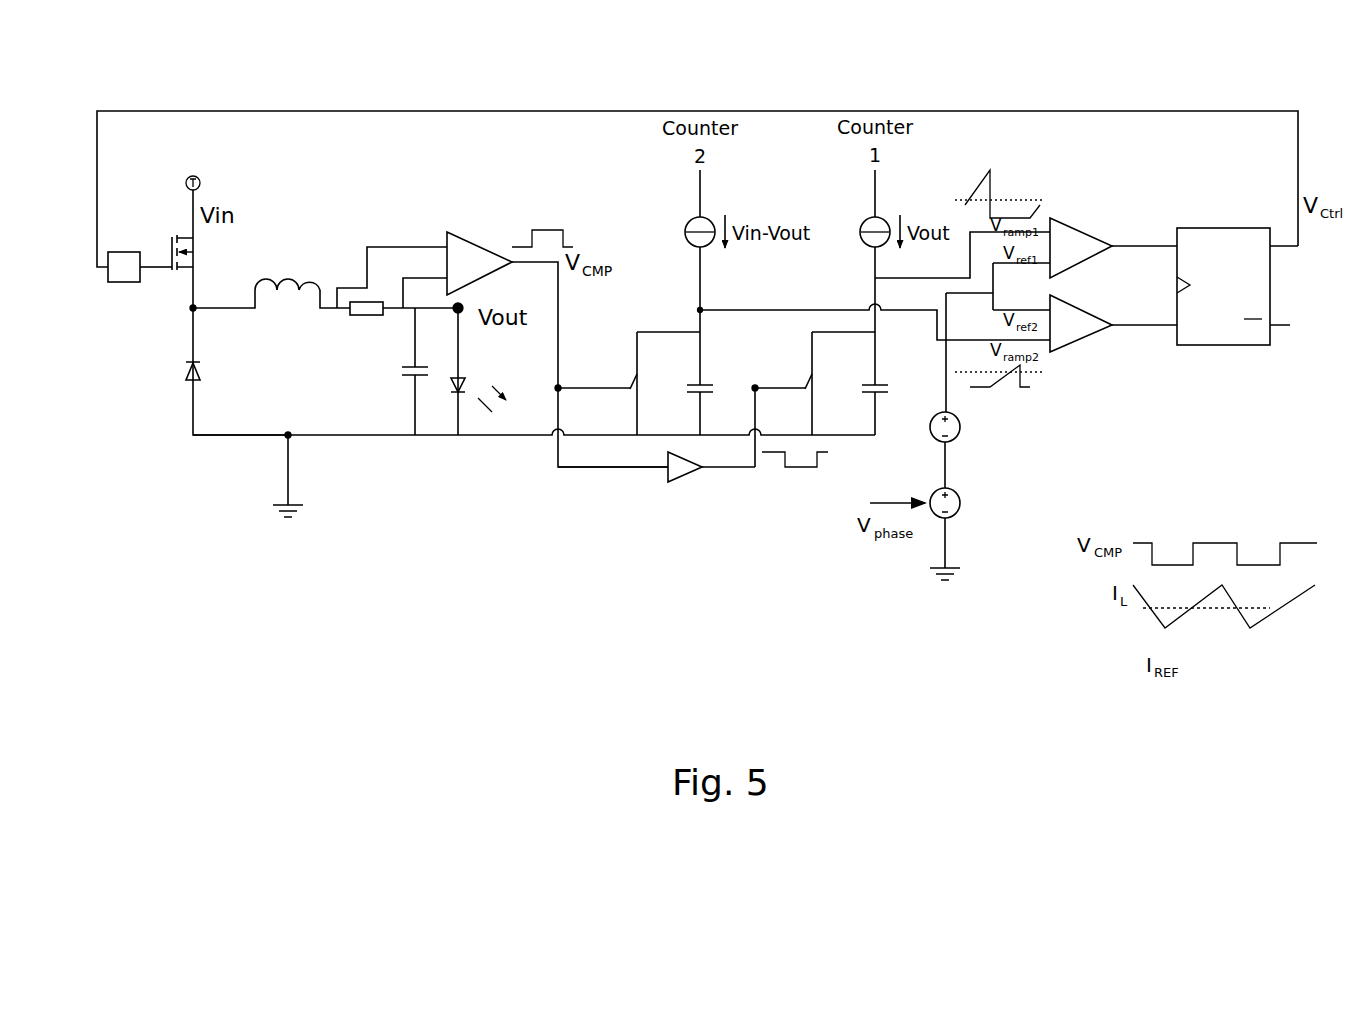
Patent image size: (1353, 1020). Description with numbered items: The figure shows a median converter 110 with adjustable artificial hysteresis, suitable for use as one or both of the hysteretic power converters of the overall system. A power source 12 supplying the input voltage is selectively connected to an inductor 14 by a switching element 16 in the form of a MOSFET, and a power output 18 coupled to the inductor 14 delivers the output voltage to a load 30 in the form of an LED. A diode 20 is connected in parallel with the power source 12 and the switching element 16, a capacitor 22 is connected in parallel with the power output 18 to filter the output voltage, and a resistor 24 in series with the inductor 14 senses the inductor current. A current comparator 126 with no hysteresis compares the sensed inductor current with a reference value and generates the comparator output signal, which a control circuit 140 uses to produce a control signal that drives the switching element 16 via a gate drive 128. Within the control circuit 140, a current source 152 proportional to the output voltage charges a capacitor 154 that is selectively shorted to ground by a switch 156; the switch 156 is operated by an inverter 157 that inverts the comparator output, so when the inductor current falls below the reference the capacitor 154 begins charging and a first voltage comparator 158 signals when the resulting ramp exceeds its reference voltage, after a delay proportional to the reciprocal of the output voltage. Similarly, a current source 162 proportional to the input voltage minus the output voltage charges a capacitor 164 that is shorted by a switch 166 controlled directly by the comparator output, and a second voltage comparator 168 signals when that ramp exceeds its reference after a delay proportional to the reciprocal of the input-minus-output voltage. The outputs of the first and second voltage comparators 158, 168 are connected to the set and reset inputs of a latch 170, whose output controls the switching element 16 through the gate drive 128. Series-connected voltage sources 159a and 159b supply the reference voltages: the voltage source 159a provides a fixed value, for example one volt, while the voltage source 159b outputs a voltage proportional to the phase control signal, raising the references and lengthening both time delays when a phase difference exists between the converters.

The power source 12 is at (207, 172).
The inductor 14 is at (288, 272).
The switching element 16 is at (207, 253).
The power output 18 is at (467, 318).
The diode 20 is at (178, 380).
The capacitor 22 is at (393, 370).
The resistor 24 is at (358, 318).
The load 30 is at (455, 400).
The median converter 110 is at (127, 518).
The current comparator 126 is at (490, 242).
The gate drive 128 is at (118, 288).
The control circuit 140 is at (560, 515).
The current source 152 is at (858, 217).
The capacitor 154 is at (857, 387).
The switch 156 is at (802, 373).
The inverter 157 is at (675, 488).
The first voltage comparator 158 is at (1075, 217).
The voltage source 159a is at (965, 440).
The voltage source 159b is at (962, 515).
The current source 162 is at (688, 222).
The capacitor 164 is at (682, 387).
The switch 166 is at (632, 375).
The second voltage comparator 168 is at (1085, 347).
The latch 170 is at (1218, 218).